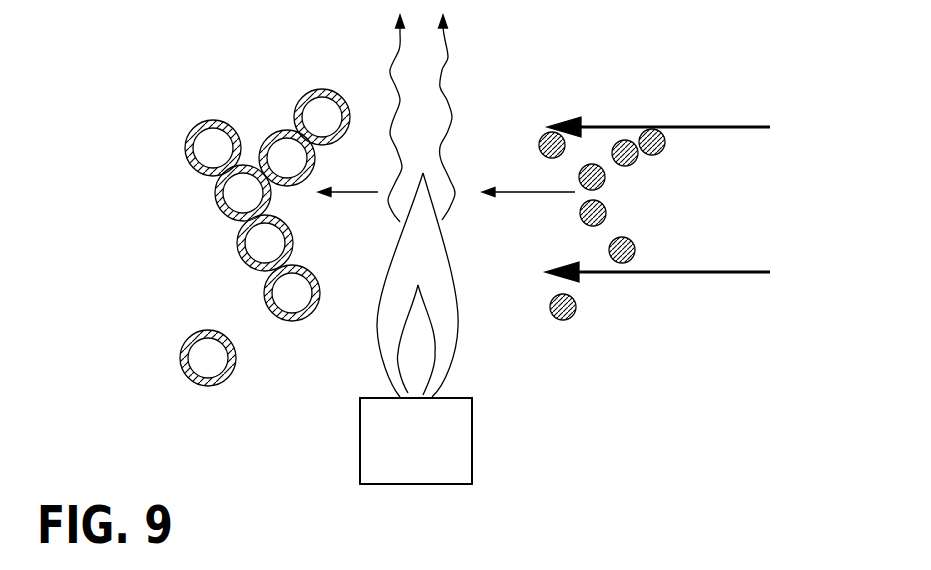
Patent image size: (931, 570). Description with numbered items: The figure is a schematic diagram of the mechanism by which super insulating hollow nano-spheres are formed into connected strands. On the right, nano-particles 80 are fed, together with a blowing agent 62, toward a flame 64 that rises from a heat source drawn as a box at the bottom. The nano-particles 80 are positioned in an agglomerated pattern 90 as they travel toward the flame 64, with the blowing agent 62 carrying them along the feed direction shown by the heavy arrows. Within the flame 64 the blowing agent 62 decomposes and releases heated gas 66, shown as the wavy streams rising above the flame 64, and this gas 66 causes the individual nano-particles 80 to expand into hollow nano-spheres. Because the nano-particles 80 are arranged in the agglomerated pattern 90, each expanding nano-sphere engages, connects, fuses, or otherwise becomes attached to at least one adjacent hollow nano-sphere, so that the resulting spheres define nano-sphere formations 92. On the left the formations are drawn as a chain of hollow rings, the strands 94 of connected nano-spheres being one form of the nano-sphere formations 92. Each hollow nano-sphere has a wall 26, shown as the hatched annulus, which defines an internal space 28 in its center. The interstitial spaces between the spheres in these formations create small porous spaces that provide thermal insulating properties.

The wall 26 is at (238, 258).
The internal space 28 is at (210, 362).
The blowing agent 62 is at (672, 127).
The flame 64 is at (377, 358).
The gas 66 is at (222, 147).
The nano-particles 80 is at (652, 155).
The agglomerated pattern 90 is at (638, 221).
The nano-sphere formations 92 is at (208, 184).
The strands 94 is at (287, 120).